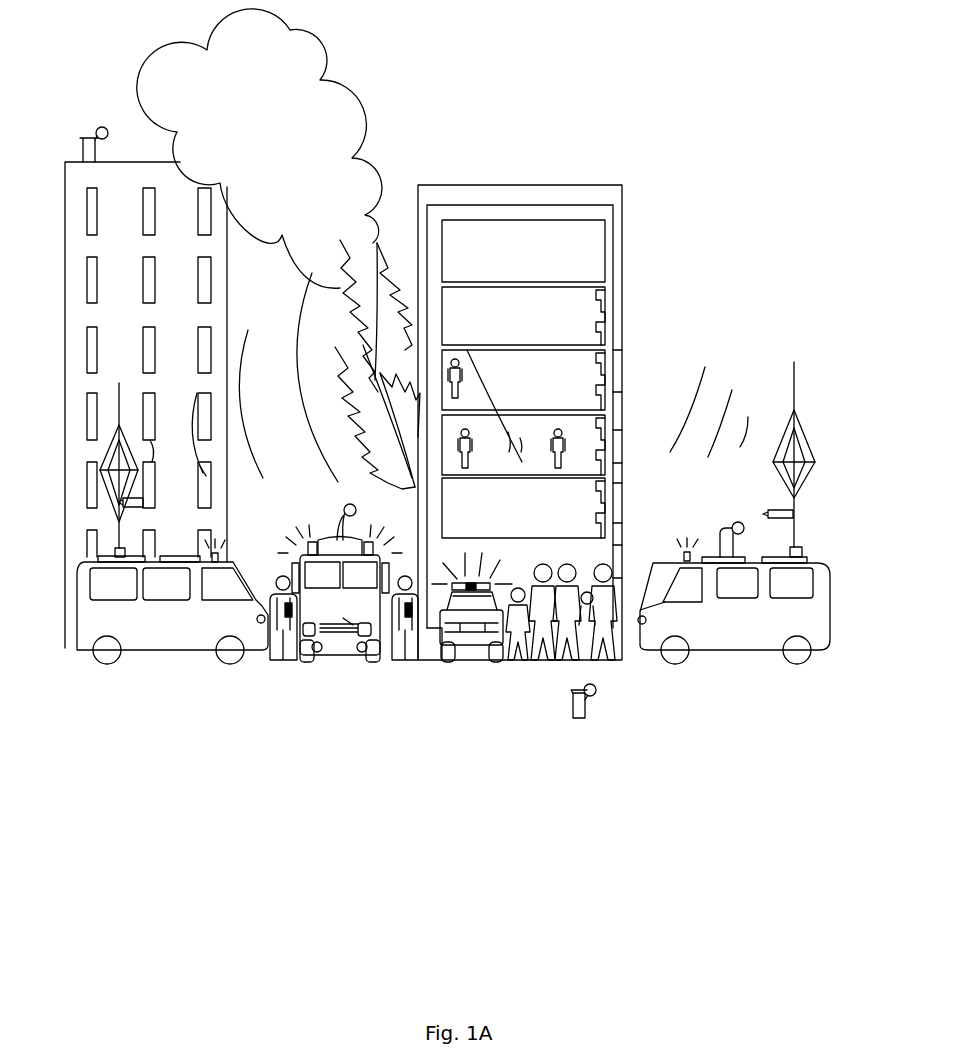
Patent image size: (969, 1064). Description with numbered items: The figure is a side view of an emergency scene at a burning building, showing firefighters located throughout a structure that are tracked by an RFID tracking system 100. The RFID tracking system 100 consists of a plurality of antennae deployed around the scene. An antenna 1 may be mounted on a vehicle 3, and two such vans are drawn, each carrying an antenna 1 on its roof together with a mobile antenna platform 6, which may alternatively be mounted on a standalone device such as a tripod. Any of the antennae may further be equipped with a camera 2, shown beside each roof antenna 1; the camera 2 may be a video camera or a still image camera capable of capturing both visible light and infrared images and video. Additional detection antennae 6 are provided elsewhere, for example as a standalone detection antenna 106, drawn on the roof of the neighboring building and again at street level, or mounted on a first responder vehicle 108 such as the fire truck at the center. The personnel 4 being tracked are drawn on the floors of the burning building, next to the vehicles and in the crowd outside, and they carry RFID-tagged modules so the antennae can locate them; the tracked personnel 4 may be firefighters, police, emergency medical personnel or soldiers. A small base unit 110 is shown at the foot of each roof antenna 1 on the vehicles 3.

The antenna 1 is at (118, 458).
The camera 2 is at (143, 502).
The vehicle 3 is at (177, 622).
The personnel 4 is at (420, 505).
The mobile antenna platform 6 is at (333, 512).
The RFID tracking system 100 is at (718, 323).
The standalone detection antenna 106 is at (92, 138).
The first responder vehicle 108 is at (353, 625).
The base station unit 110 is at (118, 548).